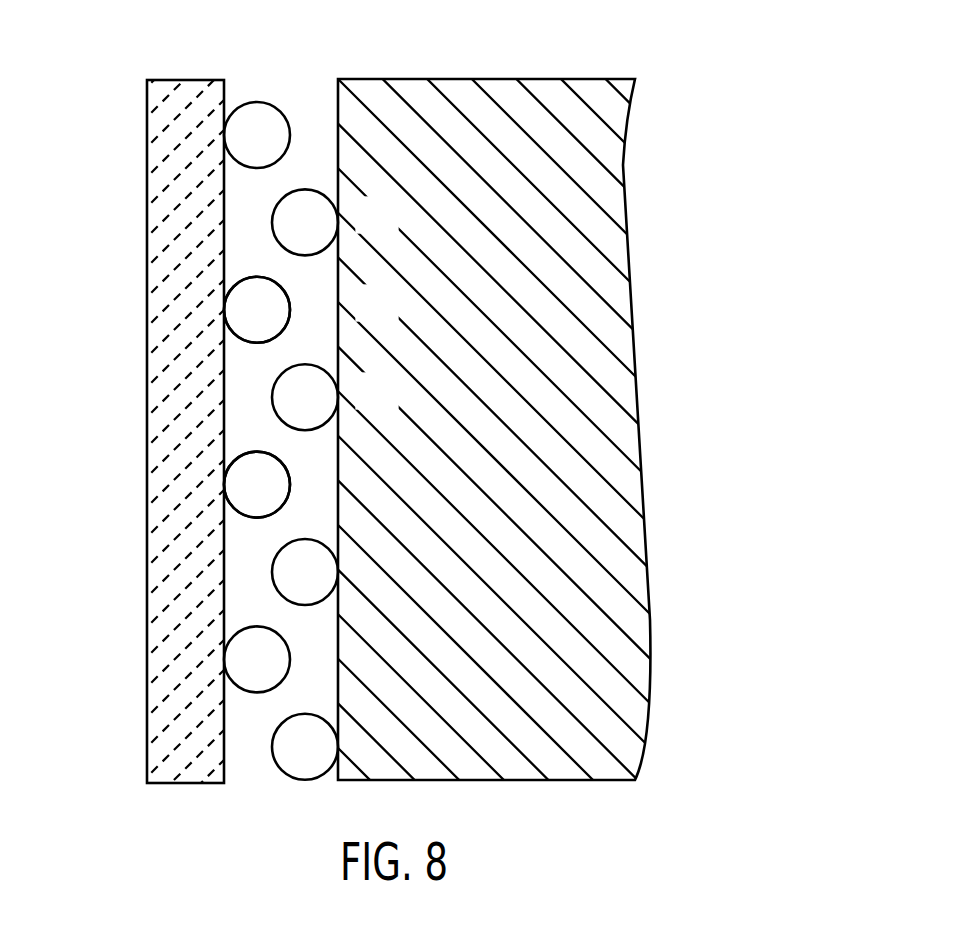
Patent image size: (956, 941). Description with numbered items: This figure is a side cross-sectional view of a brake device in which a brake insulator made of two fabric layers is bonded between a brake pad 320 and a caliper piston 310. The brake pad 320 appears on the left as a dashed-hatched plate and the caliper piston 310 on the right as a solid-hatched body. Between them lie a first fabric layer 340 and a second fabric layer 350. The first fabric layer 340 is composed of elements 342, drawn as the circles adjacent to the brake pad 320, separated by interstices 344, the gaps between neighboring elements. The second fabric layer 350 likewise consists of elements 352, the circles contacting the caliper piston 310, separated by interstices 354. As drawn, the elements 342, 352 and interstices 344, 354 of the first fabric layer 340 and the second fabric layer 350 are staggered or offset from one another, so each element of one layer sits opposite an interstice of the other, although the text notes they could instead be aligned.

The caliper piston 310 is at (493, 90).
The brake pad 320 is at (185, 93).
The first fabric layer 340 is at (255, 80).
The elements 342 is at (240, 310).
The interstices 344 is at (240, 217).
The second fabric layer 350 is at (310, 150).
The elements 352 is at (323, 221).
The interstices 354 is at (325, 308).